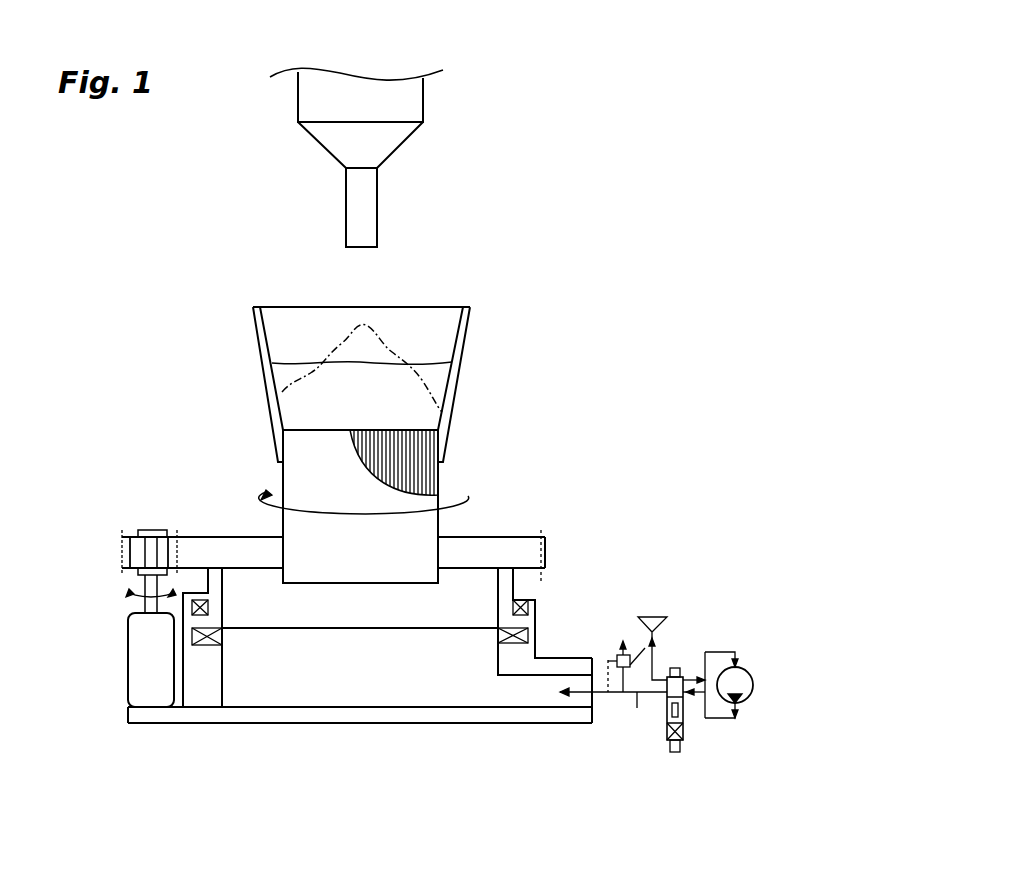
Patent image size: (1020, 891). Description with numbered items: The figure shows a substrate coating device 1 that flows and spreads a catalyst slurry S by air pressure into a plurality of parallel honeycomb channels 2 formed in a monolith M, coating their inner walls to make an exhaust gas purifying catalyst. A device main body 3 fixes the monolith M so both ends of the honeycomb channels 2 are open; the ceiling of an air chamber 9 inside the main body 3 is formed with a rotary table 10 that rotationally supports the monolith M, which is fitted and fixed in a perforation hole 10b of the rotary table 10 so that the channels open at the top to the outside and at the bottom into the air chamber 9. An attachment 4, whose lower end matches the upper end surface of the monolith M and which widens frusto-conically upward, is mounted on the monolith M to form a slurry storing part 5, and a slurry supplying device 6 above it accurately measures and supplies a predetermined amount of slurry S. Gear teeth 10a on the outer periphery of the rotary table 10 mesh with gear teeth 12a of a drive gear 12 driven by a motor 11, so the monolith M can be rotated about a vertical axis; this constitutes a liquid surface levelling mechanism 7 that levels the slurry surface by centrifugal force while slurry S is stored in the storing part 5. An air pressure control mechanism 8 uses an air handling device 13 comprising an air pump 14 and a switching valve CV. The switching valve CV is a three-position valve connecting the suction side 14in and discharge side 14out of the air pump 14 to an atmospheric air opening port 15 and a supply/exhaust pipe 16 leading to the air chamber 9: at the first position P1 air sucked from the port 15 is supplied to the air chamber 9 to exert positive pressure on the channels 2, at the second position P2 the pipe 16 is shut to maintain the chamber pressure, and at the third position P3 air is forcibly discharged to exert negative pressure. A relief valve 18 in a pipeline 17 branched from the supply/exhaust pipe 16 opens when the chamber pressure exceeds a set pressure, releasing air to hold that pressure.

The substrate coating device 1 is at (722, 77).
The honeycomb channels 2 is at (403, 468).
The device main body 3 is at (410, 758).
The attachment 4 is at (457, 378).
The slurry storing part 5 is at (312, 333).
The slurry supplying device 6 is at (377, 197).
The liquid surface levelling mechanism 7 is at (126, 508).
The air pressure control mechanism 8 is at (738, 520).
The air chamber 9 is at (355, 665).
The rotary table 10 is at (451, 486).
The gear teeth 10a is at (547, 550).
The perforation hole 10b is at (422, 543).
The motor 11 is at (140, 660).
The drive gear 12 is at (135, 548).
The gear teeth 12a is at (122, 552).
The air handling device 13 is at (669, 713).
The air pump 14 is at (764, 719).
The suction side 14in is at (708, 652).
The discharge side 14out is at (720, 720).
The atmospheric air opening port 15 is at (652, 680).
The supply/exhaust pipe 16 is at (640, 700).
The pipeline 17 is at (640, 640).
The relief valve 18 is at (617, 660).
The monolith M is at (318, 480).
The catalyst slurry S is at (360, 382).
The switching valve CV is at (675, 750).
The first position P1 is at (663, 695).
The second position P2 is at (667, 712).
The third position P3 is at (680, 747).